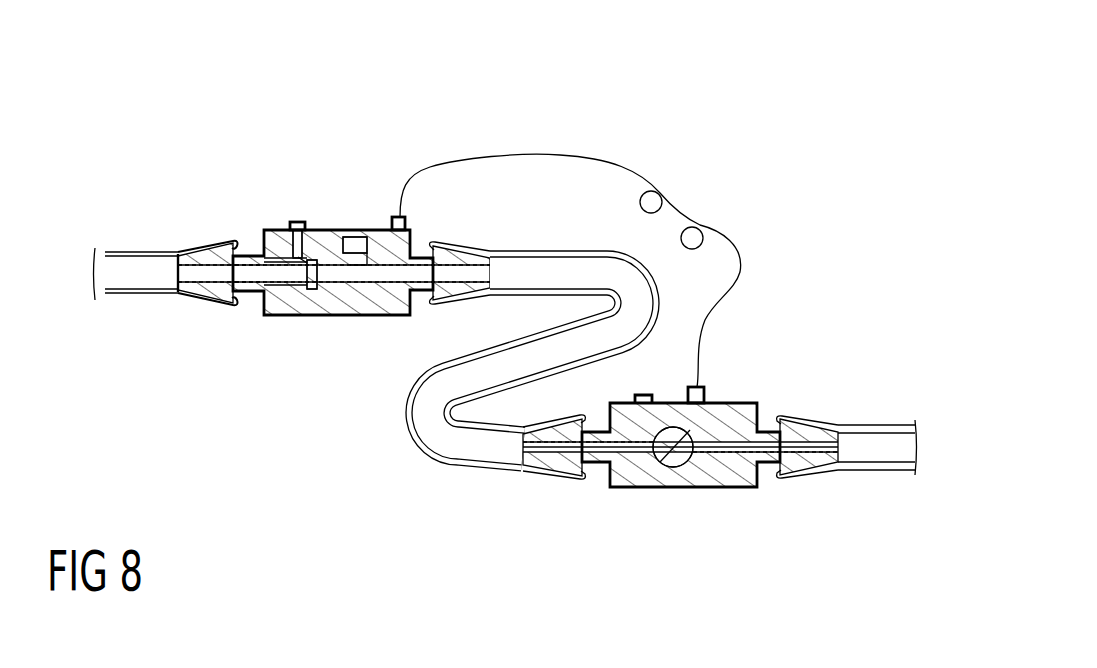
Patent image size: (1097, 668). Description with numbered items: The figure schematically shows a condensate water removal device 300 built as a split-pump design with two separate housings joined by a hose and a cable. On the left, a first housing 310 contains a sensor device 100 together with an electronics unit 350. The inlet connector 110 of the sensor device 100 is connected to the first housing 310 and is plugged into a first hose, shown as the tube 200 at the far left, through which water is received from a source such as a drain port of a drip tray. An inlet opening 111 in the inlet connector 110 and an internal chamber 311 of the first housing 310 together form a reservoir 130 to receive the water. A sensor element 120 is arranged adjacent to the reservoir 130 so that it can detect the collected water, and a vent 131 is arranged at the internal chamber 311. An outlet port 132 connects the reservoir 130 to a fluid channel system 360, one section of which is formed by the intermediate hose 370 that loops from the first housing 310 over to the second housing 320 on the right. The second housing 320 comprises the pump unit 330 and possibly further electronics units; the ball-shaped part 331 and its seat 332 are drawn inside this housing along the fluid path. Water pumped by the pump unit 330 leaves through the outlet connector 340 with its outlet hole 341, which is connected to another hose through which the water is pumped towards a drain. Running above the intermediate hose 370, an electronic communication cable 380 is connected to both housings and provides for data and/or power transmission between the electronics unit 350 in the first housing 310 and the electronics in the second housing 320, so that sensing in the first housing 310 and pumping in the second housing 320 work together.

The sensor device 100 is at (270, 255).
The inlet connector 110 is at (200, 243).
The inlet opening 111 is at (168, 273).
The sensor element 120 is at (279, 275).
The reservoir 130 is at (299, 274).
The vent 131 is at (297, 218).
The outlet port 132 is at (305, 290).
The tube 200 is at (133, 303).
The condensate water removal device 300 is at (610, 277).
The first housing 310 is at (336, 227).
The internal chamber 311 is at (286, 259).
The second housing 320 is at (677, 396).
The pump unit 330 is at (691, 430).
The ball valve 331 is at (643, 455).
The valve seat 332 is at (697, 450).
The outlet connector 340 is at (802, 418).
The outlet hole 341 is at (849, 448).
The electronics unit 350 is at (363, 231).
The fluid channel system 360 is at (338, 303).
The intermediate hose 370 is at (390, 425).
The electronic communication cable 380 is at (674, 186).